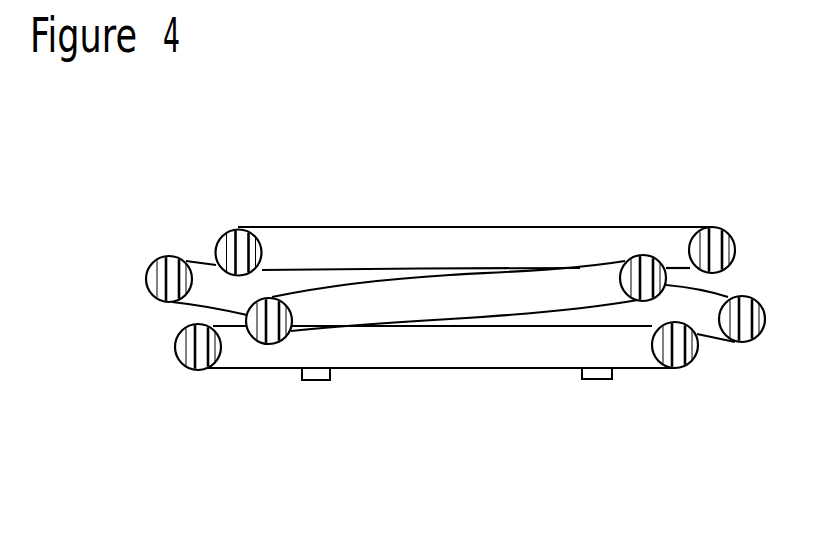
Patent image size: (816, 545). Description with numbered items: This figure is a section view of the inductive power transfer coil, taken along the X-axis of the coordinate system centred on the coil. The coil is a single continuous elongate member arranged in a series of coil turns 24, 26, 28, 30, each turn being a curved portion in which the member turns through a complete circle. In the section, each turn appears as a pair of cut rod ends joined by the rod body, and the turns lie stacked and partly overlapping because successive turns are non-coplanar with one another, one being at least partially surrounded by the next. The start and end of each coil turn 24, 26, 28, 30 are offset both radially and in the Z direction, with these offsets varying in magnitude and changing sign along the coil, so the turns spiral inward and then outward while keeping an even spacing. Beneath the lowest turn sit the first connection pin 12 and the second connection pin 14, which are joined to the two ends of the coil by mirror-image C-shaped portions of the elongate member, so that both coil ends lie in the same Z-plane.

The first connection pin 12 is at (593, 380).
The second connection pin 14 is at (313, 380).
The coil turn 24 is at (147, 276).
The coil turn 26 is at (228, 370).
The coil turn 28 is at (378, 320).
The coil turn 30 is at (433, 237).